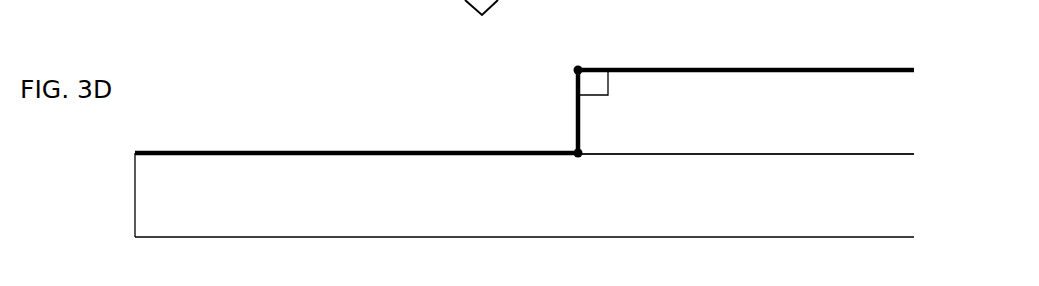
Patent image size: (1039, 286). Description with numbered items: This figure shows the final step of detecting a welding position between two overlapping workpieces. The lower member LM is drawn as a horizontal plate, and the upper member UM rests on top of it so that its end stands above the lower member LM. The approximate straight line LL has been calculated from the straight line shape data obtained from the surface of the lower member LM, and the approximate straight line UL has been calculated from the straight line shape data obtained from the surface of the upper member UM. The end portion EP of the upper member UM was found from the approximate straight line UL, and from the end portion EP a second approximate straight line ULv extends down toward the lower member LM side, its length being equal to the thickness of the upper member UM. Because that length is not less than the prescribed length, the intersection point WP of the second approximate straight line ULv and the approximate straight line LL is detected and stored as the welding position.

The approximate straight line LL is at (277, 152).
The approximate straight line UL is at (748, 68).
The second approximate straight line ULv is at (577, 120).
The end portion EP is at (578, 67).
The intersection point WP is at (578, 158).
The upper member UM is at (836, 111).
The lower member LM is at (836, 191).